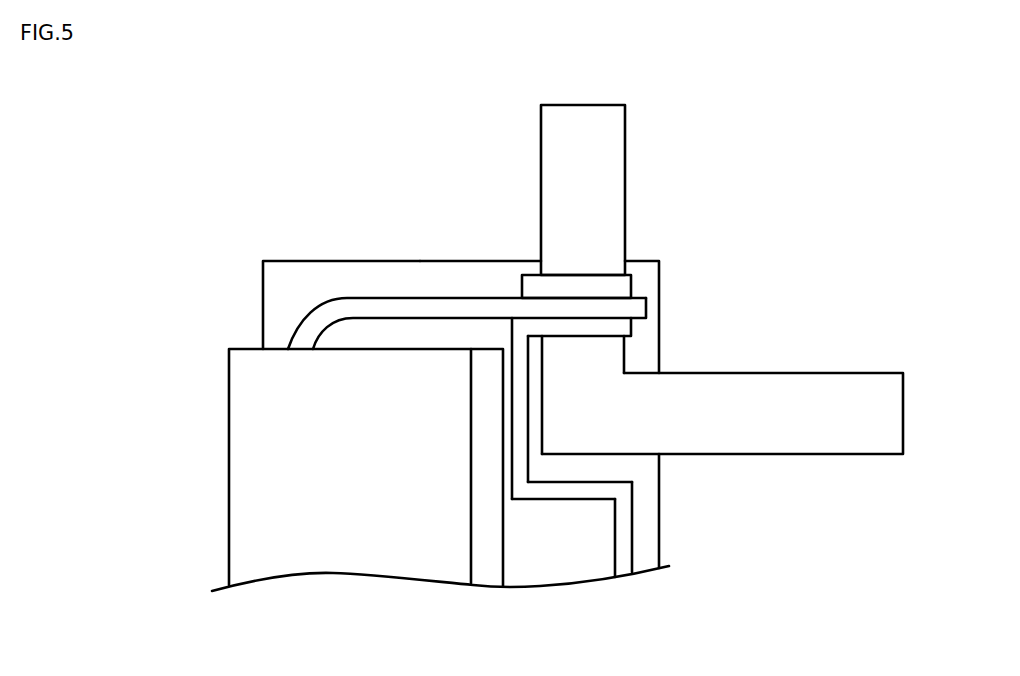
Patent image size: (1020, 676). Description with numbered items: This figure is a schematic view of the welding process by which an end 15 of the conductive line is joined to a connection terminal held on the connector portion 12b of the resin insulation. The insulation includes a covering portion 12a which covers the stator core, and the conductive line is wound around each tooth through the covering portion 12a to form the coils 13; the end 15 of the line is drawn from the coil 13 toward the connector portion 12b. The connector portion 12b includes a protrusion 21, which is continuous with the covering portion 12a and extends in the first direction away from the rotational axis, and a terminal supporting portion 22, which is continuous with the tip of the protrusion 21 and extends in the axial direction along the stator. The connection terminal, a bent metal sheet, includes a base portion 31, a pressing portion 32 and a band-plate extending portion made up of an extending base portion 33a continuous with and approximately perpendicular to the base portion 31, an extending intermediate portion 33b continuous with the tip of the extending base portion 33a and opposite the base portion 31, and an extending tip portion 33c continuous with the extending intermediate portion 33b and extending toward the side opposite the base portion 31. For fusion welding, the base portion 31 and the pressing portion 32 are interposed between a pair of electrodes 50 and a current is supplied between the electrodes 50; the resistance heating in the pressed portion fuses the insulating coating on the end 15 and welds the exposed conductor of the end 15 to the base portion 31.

The covering portion 12a is at (303, 261).
The connector portion 12b is at (698, 293).
The coil 13 is at (360, 557).
The end of the conductive line 15 is at (414, 310).
The protrusion 21 is at (492, 261).
The terminal supporting portion 22 is at (661, 491).
The base portion 31 is at (577, 328).
The pressing portion 32 is at (583, 274).
The extending base portion 33a is at (522, 402).
The extending intermediate portion 33b is at (565, 490).
The extending tip portion 33c is at (624, 535).
The electrode 50 is at (625, 123).